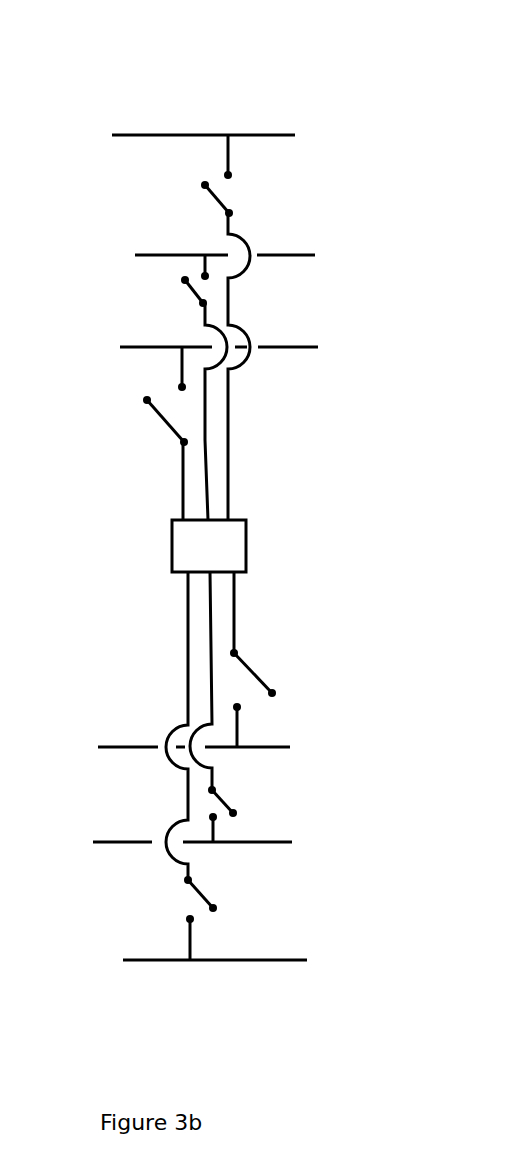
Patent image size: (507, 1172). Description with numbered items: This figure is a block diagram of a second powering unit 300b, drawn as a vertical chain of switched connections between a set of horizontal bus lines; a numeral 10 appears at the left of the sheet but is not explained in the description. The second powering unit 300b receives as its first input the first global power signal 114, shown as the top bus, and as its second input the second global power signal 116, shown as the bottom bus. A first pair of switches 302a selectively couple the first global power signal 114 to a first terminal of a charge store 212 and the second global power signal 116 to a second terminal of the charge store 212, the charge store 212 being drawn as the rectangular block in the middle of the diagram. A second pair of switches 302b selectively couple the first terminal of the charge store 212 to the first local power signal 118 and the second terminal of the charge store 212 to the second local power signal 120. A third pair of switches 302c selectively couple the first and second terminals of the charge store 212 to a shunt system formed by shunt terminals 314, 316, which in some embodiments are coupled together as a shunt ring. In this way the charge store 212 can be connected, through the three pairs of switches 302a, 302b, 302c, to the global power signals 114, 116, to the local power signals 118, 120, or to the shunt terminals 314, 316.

The electrical system 10 is at (184, 548).
The first global power signal 114 is at (279, 134).
The first local power signal 118 is at (286, 251).
The shunt terminal 314 is at (296, 342).
The charge store 212 is at (247, 545).
The shunt terminal 316 is at (118, 745).
The second local power signal 120 is at (133, 835).
The second global power signal 116 is at (136, 956).
The first pair of switches 302a is at (200, 187).
The second pair of switches 302b is at (190, 304).
The third pair of switches 302c is at (155, 410).
The second powering unit 300b is at (79, 892).